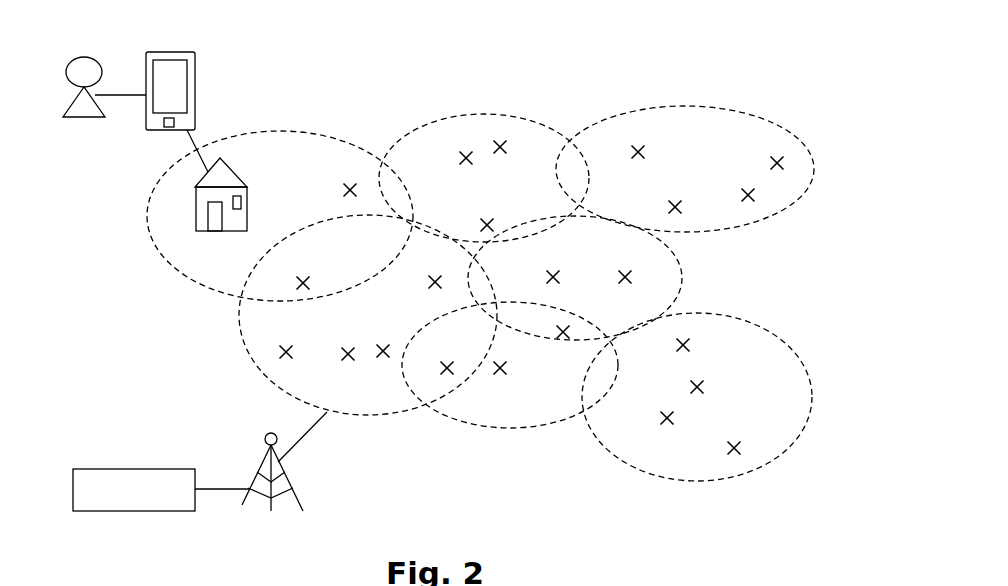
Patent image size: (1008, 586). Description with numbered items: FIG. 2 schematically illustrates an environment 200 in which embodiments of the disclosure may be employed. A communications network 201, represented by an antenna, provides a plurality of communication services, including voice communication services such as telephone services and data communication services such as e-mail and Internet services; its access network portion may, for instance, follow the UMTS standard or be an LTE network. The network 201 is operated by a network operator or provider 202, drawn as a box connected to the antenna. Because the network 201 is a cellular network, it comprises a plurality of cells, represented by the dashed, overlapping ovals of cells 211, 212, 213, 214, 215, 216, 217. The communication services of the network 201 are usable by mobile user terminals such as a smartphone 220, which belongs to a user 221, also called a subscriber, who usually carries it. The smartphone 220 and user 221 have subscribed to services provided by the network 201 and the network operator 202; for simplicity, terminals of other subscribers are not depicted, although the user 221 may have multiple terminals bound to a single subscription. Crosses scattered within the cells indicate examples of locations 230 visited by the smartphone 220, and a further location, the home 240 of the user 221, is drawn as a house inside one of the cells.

The environment 200 is at (700, 58).
The communications network 201 is at (297, 493).
The network operator 202 is at (106, 467).
The cell 211 is at (332, 134).
The cell 212 is at (498, 115).
The cell 213 is at (785, 128).
The cell 214 is at (683, 285).
The cell 215 is at (757, 325).
The cell 216 is at (500, 427).
The cell 217 is at (249, 352).
The smartphone 220 is at (195, 61).
The user 221 is at (83, 56).
The locations 230 is at (468, 157).
The home 240 is at (195, 202).